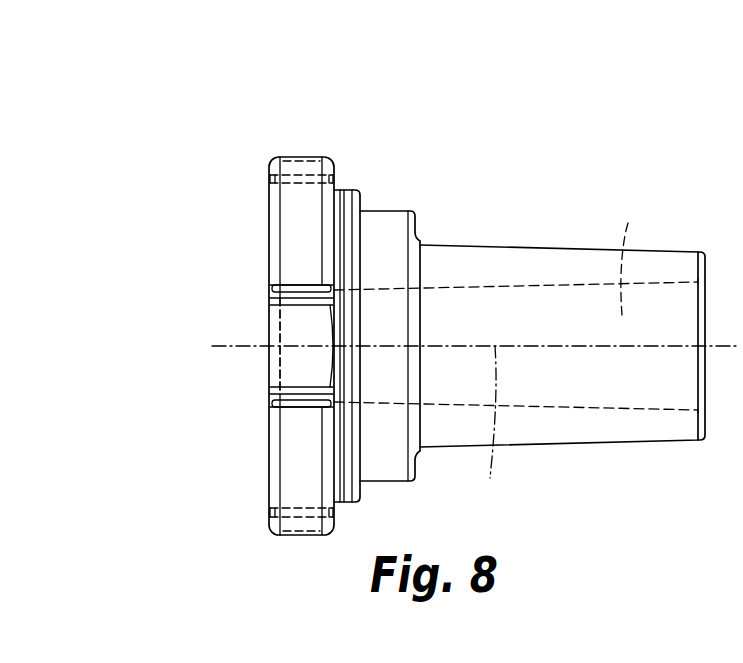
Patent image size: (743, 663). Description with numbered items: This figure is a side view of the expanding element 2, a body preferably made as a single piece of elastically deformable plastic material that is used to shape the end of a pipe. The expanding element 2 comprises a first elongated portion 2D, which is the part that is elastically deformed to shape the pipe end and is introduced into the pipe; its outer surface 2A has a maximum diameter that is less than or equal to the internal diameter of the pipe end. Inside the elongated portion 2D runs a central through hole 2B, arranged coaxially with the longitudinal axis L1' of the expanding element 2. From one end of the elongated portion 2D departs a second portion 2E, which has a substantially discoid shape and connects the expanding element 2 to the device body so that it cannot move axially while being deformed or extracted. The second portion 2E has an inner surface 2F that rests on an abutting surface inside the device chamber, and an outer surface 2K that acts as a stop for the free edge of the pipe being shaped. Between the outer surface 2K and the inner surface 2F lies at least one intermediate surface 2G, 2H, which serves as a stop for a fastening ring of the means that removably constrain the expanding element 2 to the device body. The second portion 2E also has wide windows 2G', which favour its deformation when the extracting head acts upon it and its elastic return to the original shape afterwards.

The expanding element 2 is at (192, 158).
The outer surface 2A is at (523, 245).
The central through hole 2B is at (630, 252).
The first elongated portion 2D is at (705, 122).
The second portion 2E is at (415, 122).
The inner surface 2F is at (268, 465).
The intermediate surface 2G is at (335, 266).
The windows 2G' is at (246, 349).
The intermediate surface 2H is at (360, 202).
The outer surface 2K is at (418, 233).
The longitudinal axis L1' is at (490, 430).